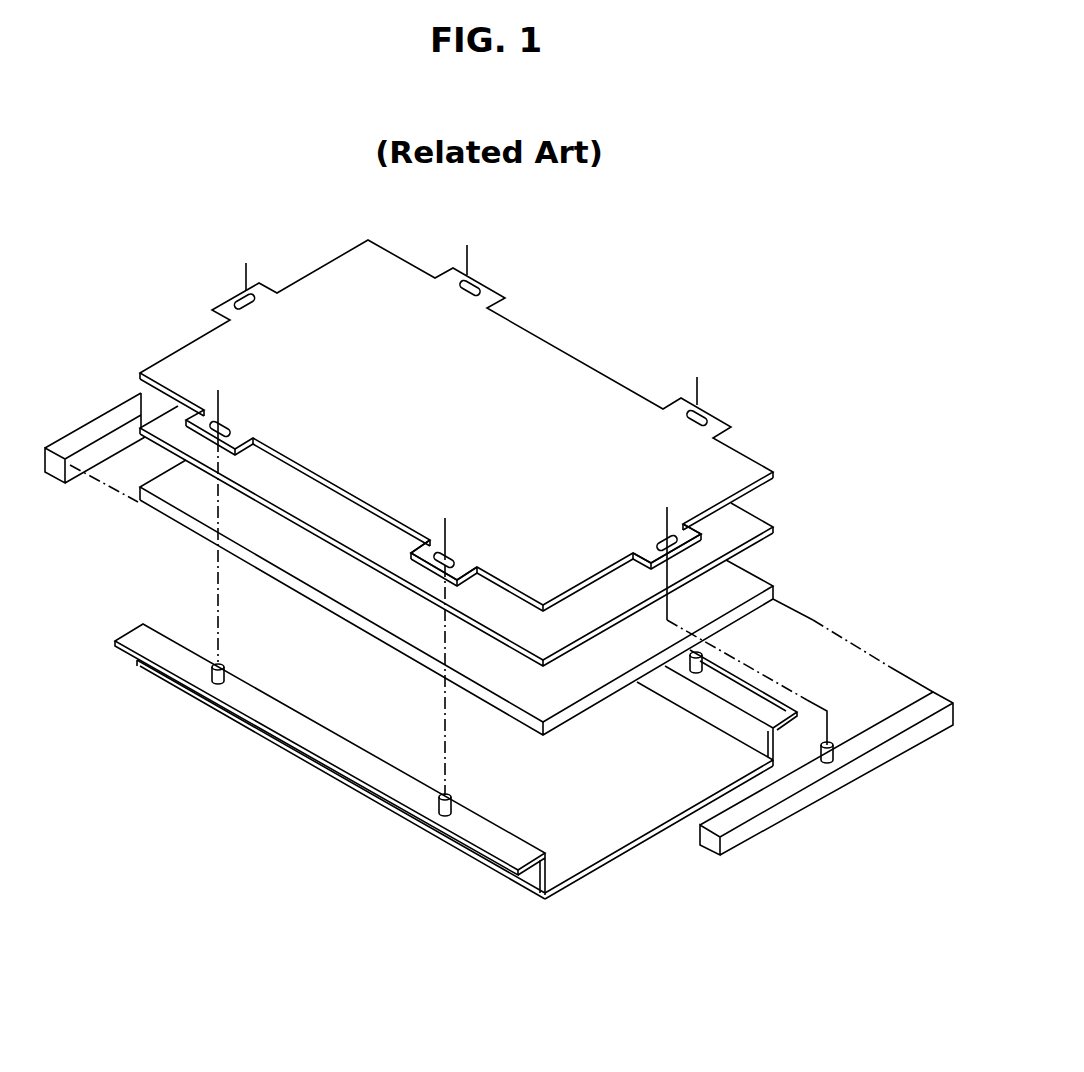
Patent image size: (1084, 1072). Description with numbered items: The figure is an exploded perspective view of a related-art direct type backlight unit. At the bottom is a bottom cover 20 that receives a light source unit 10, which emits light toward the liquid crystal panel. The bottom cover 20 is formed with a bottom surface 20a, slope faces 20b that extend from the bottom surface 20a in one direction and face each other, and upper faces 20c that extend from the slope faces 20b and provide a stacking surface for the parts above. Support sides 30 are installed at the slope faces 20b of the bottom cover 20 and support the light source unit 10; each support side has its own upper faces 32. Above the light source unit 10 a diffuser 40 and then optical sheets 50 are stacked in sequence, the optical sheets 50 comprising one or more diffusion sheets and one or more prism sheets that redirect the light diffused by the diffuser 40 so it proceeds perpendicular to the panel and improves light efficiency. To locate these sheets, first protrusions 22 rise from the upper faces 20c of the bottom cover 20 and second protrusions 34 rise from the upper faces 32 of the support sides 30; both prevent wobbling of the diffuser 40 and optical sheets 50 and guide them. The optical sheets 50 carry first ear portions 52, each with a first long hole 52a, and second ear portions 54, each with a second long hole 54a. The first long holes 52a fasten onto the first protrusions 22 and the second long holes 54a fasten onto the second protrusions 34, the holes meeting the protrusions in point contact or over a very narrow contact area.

The light source unit 10 is at (755, 582).
The bottom cover 20 is at (444, 803).
The bottom surface 20a is at (563, 880).
The slope faces 20b is at (536, 878).
The upper faces 20c is at (527, 877).
The first protrusions 22 is at (443, 802).
The support sides 30 is at (499, 644).
The upper faces of the support sides 32 is at (760, 803).
The second protrusions 34 is at (837, 763).
The diffuser 40 is at (757, 521).
The optical sheets 50 is at (740, 458).
The first ear portions 52 is at (465, 530).
The first long holes 52a is at (452, 552).
The second ear portions 54 is at (716, 603).
The second long holes 54a is at (655, 540).